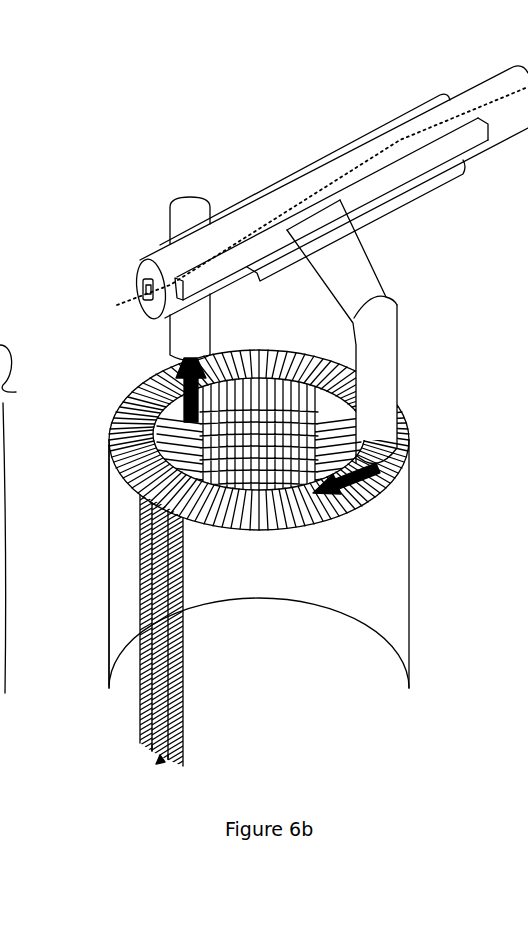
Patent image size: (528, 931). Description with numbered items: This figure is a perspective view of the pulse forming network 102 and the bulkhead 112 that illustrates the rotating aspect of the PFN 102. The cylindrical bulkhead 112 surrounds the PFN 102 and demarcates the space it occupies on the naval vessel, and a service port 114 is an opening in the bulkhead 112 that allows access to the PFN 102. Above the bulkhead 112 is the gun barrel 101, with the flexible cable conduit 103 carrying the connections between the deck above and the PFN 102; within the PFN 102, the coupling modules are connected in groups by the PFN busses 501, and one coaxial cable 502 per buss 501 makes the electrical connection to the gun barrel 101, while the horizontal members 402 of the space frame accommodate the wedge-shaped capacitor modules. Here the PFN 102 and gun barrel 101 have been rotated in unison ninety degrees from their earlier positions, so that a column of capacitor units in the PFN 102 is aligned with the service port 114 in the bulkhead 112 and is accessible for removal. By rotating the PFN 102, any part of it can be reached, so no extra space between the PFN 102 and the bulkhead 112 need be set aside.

The gun barrel 101 is at (377, 128).
The flexible cable conduit 103 is at (220, 200).
The bulkhead 112 is at (325, 660).
The PFN busses 501 is at (117, 603).
The coaxial cables 502 is at (180, 368).
The horizontal members 402 is at (380, 497).
The pulse forming network (PFN) 102 is at (155, 745).
The service port 114 is at (160, 755).